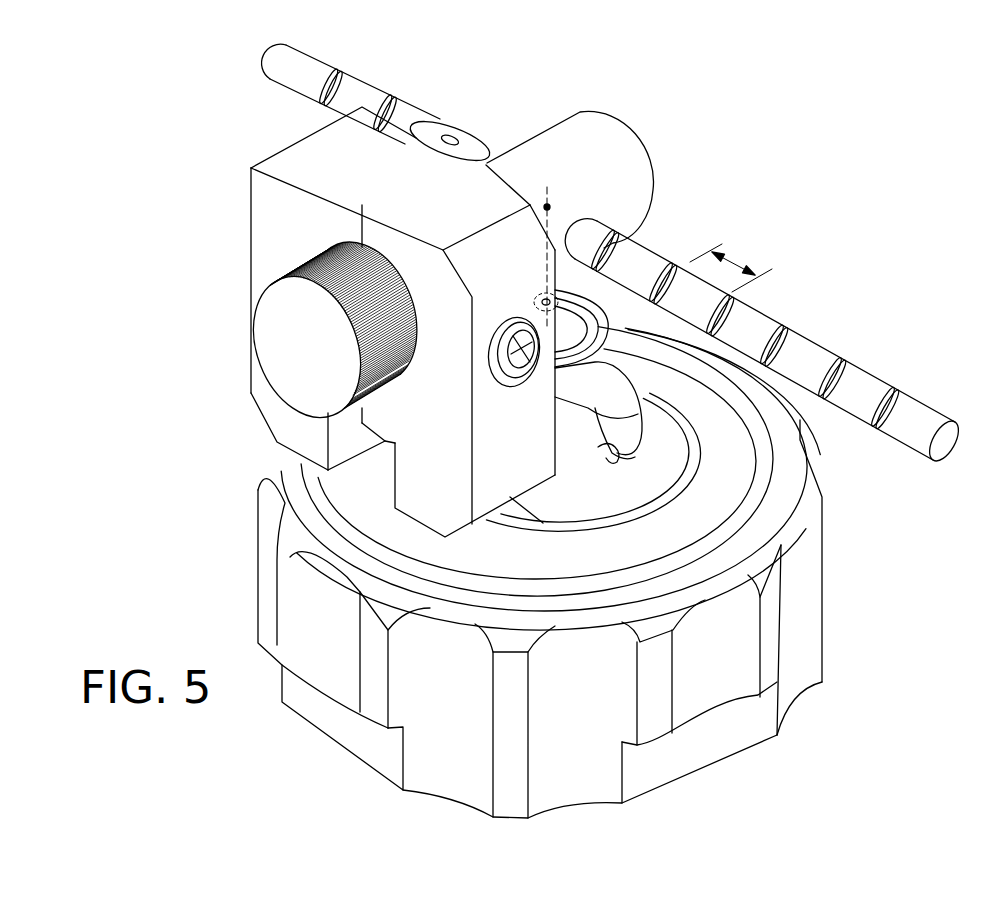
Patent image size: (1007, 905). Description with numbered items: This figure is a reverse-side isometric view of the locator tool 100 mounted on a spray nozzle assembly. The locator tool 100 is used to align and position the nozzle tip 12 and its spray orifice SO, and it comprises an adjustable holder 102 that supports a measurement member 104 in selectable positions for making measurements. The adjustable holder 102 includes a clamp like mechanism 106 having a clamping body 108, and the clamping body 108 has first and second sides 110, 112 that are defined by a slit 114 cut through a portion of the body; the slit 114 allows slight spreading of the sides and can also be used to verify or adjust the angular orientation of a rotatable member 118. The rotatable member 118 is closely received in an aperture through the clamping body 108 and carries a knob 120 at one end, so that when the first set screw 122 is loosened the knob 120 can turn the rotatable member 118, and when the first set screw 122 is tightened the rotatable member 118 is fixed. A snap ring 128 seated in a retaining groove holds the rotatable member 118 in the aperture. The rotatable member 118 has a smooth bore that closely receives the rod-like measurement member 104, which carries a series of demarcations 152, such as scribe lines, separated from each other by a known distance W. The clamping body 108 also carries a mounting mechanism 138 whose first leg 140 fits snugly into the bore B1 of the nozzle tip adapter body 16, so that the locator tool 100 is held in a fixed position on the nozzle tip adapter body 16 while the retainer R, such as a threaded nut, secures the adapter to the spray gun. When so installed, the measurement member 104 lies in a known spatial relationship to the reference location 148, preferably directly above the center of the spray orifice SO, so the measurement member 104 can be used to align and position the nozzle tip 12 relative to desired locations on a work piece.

The locator tool 100 is at (763, 163).
The adjustable holder 102 is at (178, 293).
The measurement member 104 is at (262, 68).
The clamp like mechanism 106 is at (252, 207).
The clamping body 108 is at (310, 142).
The first side 110 is at (265, 406).
The second side 112 is at (444, 503).
The slit 114 is at (361, 228).
The rotatable member 118 is at (643, 209).
The knob 120 is at (278, 329).
The first set screw 122 is at (527, 382).
The snap ring 128 is at (430, 140).
The mounting mechanism 138 is at (727, 433).
The first leg 140 is at (627, 400).
The reference location 148 is at (547, 207).
The demarcations 152 is at (780, 330).
The nozzle tip 12 is at (567, 330).
The nozzle tip adapter body 16 is at (658, 480).
The bore B1 is at (603, 448).
The retainer R is at (808, 587).
The spray orifice SO is at (543, 297).
The distance W is at (731, 264).